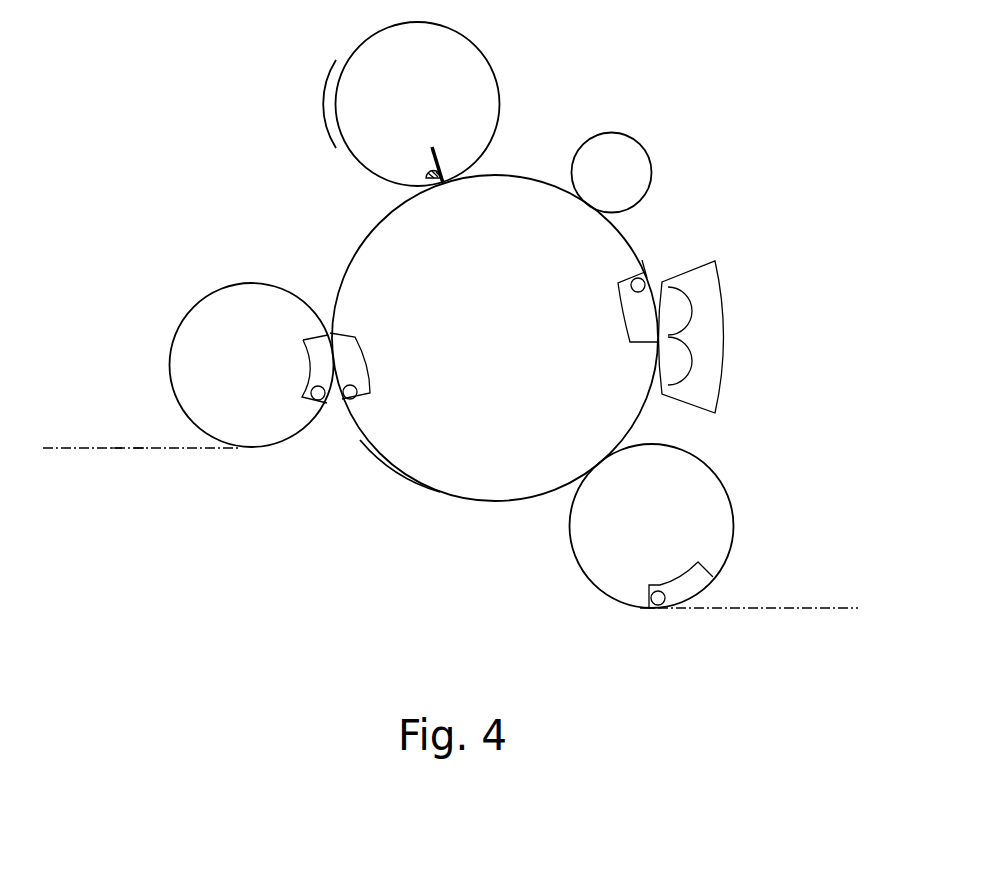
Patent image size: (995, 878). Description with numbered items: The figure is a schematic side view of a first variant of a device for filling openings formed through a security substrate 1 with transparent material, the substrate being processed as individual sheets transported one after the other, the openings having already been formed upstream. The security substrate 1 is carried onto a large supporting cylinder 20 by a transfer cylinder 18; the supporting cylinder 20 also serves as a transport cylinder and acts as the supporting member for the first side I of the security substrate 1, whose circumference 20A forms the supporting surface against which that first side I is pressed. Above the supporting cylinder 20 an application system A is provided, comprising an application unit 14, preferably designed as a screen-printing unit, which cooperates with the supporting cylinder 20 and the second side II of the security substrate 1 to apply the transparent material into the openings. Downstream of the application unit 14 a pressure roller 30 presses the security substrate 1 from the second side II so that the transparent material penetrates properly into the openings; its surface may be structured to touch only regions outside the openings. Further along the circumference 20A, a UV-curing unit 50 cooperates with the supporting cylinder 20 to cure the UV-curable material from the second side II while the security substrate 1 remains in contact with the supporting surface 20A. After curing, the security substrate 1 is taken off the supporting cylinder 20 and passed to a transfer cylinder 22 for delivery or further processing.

The security substrate 1 is at (80, 448).
The application unit 14 is at (459, 50).
The transfer cylinder 18 is at (226, 300).
The supporting cylinder 20 is at (551, 282).
The circumference of the supporting cylinder 20A is at (399, 480).
The transfer cylinder 22 is at (723, 538).
The pressure roller 30 is at (630, 157).
The UV-curing unit 50 is at (710, 337).
The application system A is at (320, 122).
The first side of the security substrate I is at (141, 458).
The second side of the security substrate II is at (116, 438).